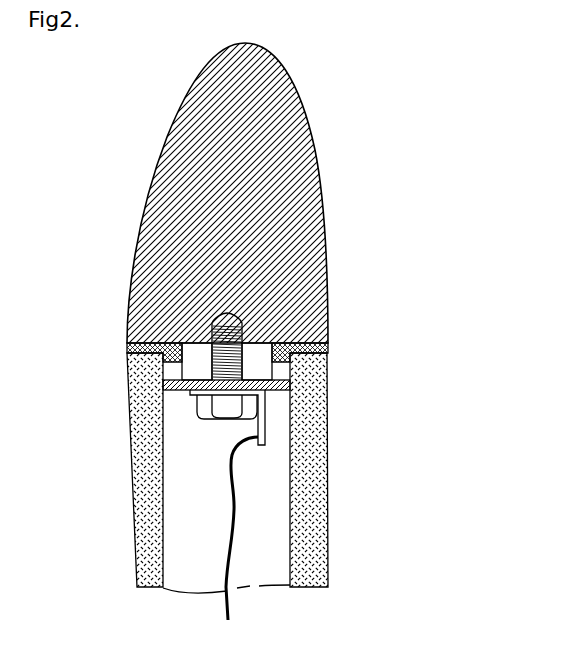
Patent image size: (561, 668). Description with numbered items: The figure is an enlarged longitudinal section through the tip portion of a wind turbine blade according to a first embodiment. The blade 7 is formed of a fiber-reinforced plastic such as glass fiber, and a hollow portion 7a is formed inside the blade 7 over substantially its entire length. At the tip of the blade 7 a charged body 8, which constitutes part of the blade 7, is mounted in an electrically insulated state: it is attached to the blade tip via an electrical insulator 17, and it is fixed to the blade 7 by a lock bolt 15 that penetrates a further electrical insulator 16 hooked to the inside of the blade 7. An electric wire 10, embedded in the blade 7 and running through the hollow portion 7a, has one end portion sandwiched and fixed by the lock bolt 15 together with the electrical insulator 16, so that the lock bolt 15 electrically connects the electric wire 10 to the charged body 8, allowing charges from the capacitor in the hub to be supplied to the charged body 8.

The charged body 8 is at (310, 137).
The electrical insulator 17 is at (127, 351).
The electrical insulator 16 is at (163, 381).
The lock bolt 15 is at (200, 407).
The blade 7 is at (327, 411).
The hollow portion 7a is at (290, 534).
The electric wire 10 is at (225, 606).